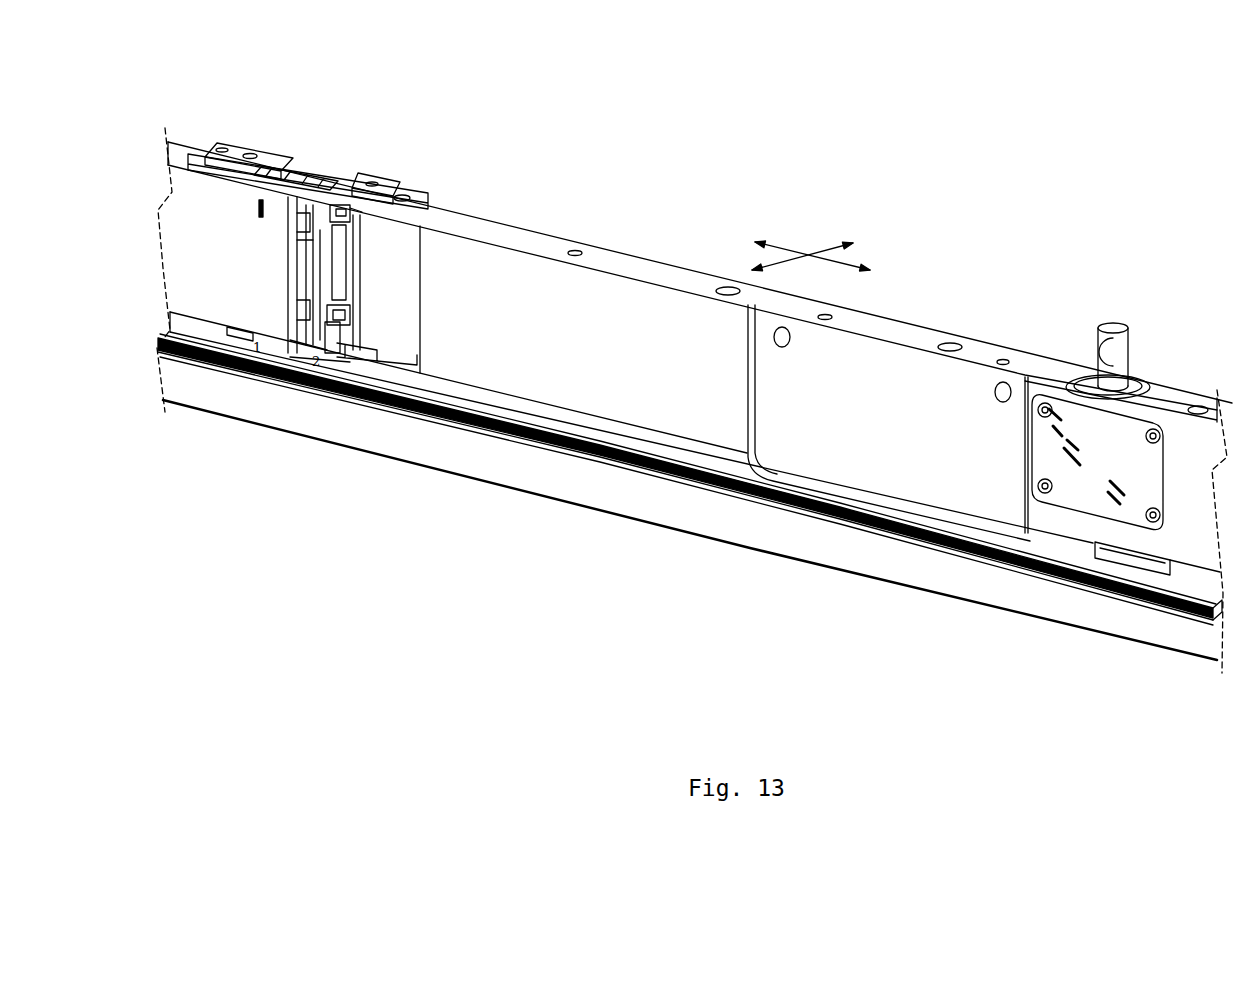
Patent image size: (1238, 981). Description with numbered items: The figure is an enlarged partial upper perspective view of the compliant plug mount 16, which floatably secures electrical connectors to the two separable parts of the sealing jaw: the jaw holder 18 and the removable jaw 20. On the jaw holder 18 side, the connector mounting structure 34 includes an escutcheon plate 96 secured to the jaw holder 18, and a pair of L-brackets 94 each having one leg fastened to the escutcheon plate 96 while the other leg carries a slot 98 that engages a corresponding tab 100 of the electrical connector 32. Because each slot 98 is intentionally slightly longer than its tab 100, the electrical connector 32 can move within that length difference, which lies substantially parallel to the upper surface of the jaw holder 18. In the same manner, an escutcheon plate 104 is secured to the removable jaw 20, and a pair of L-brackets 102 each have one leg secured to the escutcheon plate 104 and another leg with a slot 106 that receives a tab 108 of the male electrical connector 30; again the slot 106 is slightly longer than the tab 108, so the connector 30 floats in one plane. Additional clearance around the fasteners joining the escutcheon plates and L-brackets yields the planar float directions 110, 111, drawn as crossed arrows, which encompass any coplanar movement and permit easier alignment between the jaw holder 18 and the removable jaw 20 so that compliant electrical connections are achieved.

The compliant plug mount 16 is at (332, 117).
The jaw holder 18 is at (597, 248).
The removable jaw 20 is at (758, 547).
The male electrical connector 30 is at (165, 400).
The electrical connector 32 is at (302, 235).
The connector mounting structure 34 is at (262, 102).
The L-bracket 94 is at (263, 147).
The escutcheon plate 96 is at (417, 190).
The slot 98 is at (328, 208).
The tab 100 is at (357, 213).
The L-bracket 102 is at (340, 330).
The escutcheon plate 104 is at (305, 268).
The slot 106 is at (345, 313).
The tab 108 is at (337, 323).
The float direction 110 is at (830, 245).
The float direction 111 is at (780, 245).